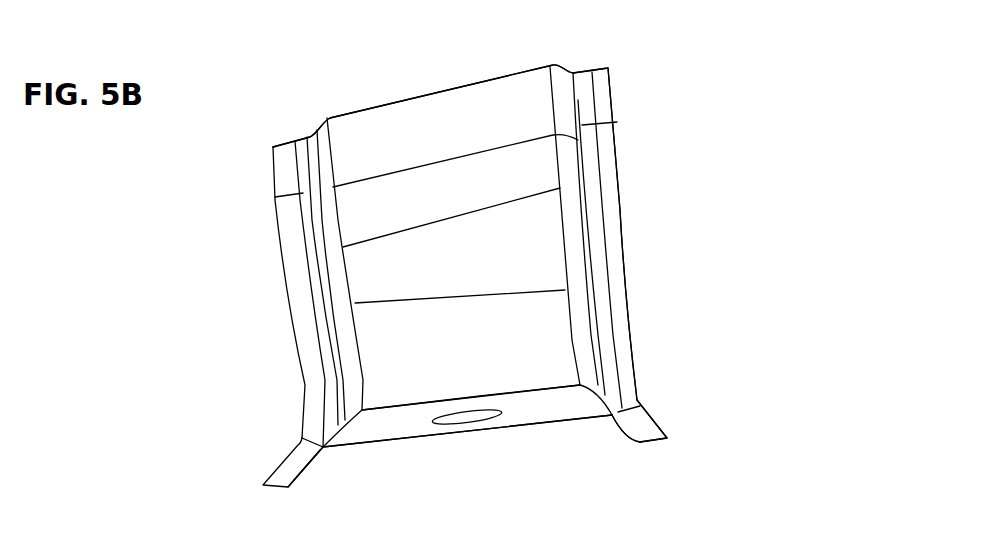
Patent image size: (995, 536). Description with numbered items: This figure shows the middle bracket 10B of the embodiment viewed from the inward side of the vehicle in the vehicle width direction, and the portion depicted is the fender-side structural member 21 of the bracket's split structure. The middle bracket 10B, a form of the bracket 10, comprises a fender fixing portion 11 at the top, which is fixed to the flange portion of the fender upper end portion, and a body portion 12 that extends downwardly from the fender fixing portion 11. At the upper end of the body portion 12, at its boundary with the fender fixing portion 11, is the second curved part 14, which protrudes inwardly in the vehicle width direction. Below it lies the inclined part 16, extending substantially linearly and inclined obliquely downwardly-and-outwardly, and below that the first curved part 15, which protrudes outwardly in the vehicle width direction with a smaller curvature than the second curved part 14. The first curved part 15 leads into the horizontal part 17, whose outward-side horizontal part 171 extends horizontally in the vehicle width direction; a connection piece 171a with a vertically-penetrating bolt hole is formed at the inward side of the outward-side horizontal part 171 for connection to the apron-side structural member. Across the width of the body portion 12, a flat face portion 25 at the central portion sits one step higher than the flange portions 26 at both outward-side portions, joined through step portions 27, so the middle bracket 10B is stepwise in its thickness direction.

The middle bracket 10B is at (740, 125).
The bracket 10 is at (455, 232).
The fender fixing portion 11 is at (393, 133).
The body portion 12 is at (290, 337).
The second curved part 14 is at (453, 183).
The first curved part 15 is at (523, 322).
The inclined part 16 is at (522, 230).
The horizontal part 17 is at (467, 431).
The fender-side structural member 21 is at (669, 129).
The flat face portion 25 is at (547, 407).
The flange portions 26 is at (280, 467).
The step portions 27 is at (305, 465).
The outward-side horizontal part 171 is at (365, 427).
The connection piece 171a is at (402, 422).